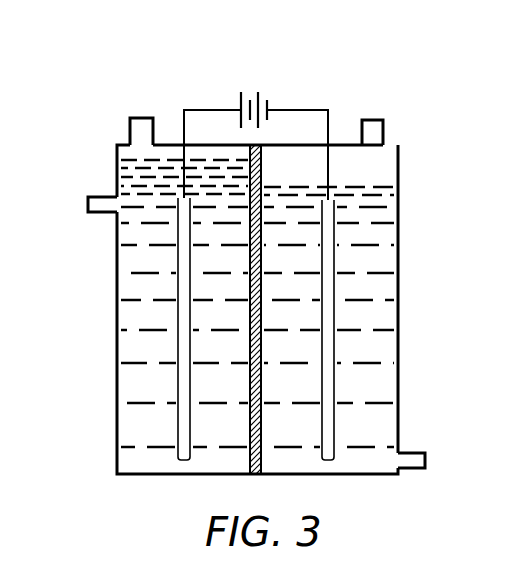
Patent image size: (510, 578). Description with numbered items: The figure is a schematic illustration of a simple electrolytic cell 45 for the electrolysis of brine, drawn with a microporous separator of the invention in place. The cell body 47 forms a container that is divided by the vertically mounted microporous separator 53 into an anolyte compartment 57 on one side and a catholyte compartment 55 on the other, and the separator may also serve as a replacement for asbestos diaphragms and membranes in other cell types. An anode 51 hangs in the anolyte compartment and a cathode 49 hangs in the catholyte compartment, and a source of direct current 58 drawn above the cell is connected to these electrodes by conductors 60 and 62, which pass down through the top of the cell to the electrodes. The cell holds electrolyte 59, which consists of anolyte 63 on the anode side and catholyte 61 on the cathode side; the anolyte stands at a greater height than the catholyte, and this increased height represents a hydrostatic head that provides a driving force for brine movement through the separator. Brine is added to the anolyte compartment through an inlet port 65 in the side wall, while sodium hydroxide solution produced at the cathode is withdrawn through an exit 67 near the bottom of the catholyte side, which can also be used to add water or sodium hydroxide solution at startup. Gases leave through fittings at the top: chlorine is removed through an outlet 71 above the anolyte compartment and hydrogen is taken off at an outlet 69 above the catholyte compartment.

The electrolytic cell 45 is at (412, 237).
The cell body 47 is at (398, 294).
The cathode 49 is at (335, 262).
The anode 51 is at (178, 258).
The microporous separator 53 is at (262, 347).
The catholyte compartment 55 is at (382, 168).
The anolyte compartment 57 is at (140, 153).
The source of direct current 58 is at (257, 92).
The electrolyte 59 is at (236, 393).
The conductor 60 is at (310, 110).
The catholyte 61 is at (382, 383).
The conductor 62 is at (220, 110).
The anolyte 63 is at (145, 378).
The inlet port 65 is at (88, 205).
The exit 67 is at (418, 453).
The outlet 69 is at (378, 120).
The outlet 71 is at (150, 118).